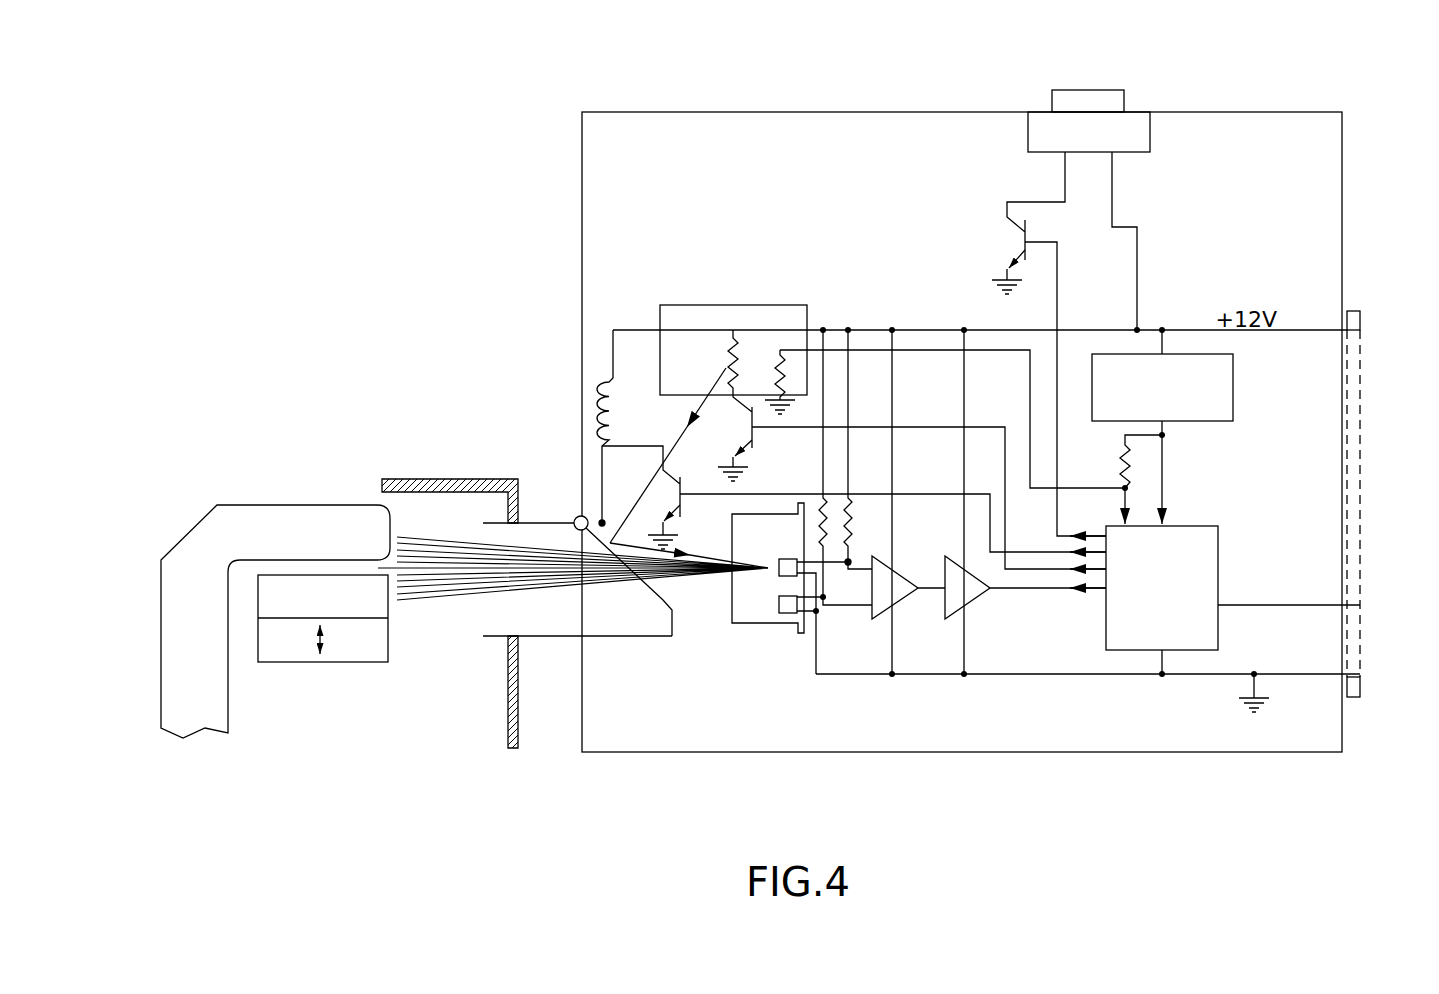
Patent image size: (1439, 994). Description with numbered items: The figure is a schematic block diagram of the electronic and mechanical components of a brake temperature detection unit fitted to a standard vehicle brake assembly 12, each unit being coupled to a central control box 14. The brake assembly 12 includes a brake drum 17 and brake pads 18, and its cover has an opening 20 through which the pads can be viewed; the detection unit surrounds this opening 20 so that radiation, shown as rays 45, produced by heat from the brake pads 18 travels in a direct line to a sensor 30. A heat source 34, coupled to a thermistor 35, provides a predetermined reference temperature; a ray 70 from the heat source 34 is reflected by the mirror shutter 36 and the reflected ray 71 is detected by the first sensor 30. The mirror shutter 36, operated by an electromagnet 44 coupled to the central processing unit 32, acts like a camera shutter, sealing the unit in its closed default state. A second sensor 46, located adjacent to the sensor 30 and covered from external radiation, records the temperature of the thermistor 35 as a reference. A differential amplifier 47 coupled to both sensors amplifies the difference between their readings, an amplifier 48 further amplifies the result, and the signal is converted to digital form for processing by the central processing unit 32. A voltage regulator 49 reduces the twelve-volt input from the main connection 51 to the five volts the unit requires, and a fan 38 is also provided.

The brake assembly 12 is at (310, 427).
The central control box 14 is at (483, 478).
The brake drum 17 is at (212, 690).
The brake pads 18 is at (273, 583).
The opening 20 is at (498, 617).
The sensor 30 is at (763, 600).
The central processing unit 32 is at (1188, 650).
The heat source 34 is at (667, 305).
The thermistor 35 is at (778, 352).
The mirror shutter 36 is at (665, 600).
The fan 38 is at (1065, 90).
The electromagnet 44 is at (597, 423).
The rays 45 is at (433, 598).
The second sensor 46 is at (785, 618).
The differential amplifier 47 is at (900, 600).
The amplifier 48 is at (980, 600).
The voltage regulator 49 is at (1233, 385).
The main connection 51 is at (1355, 310).
The ray 70 is at (673, 442).
The reflected ray 71 is at (635, 548).